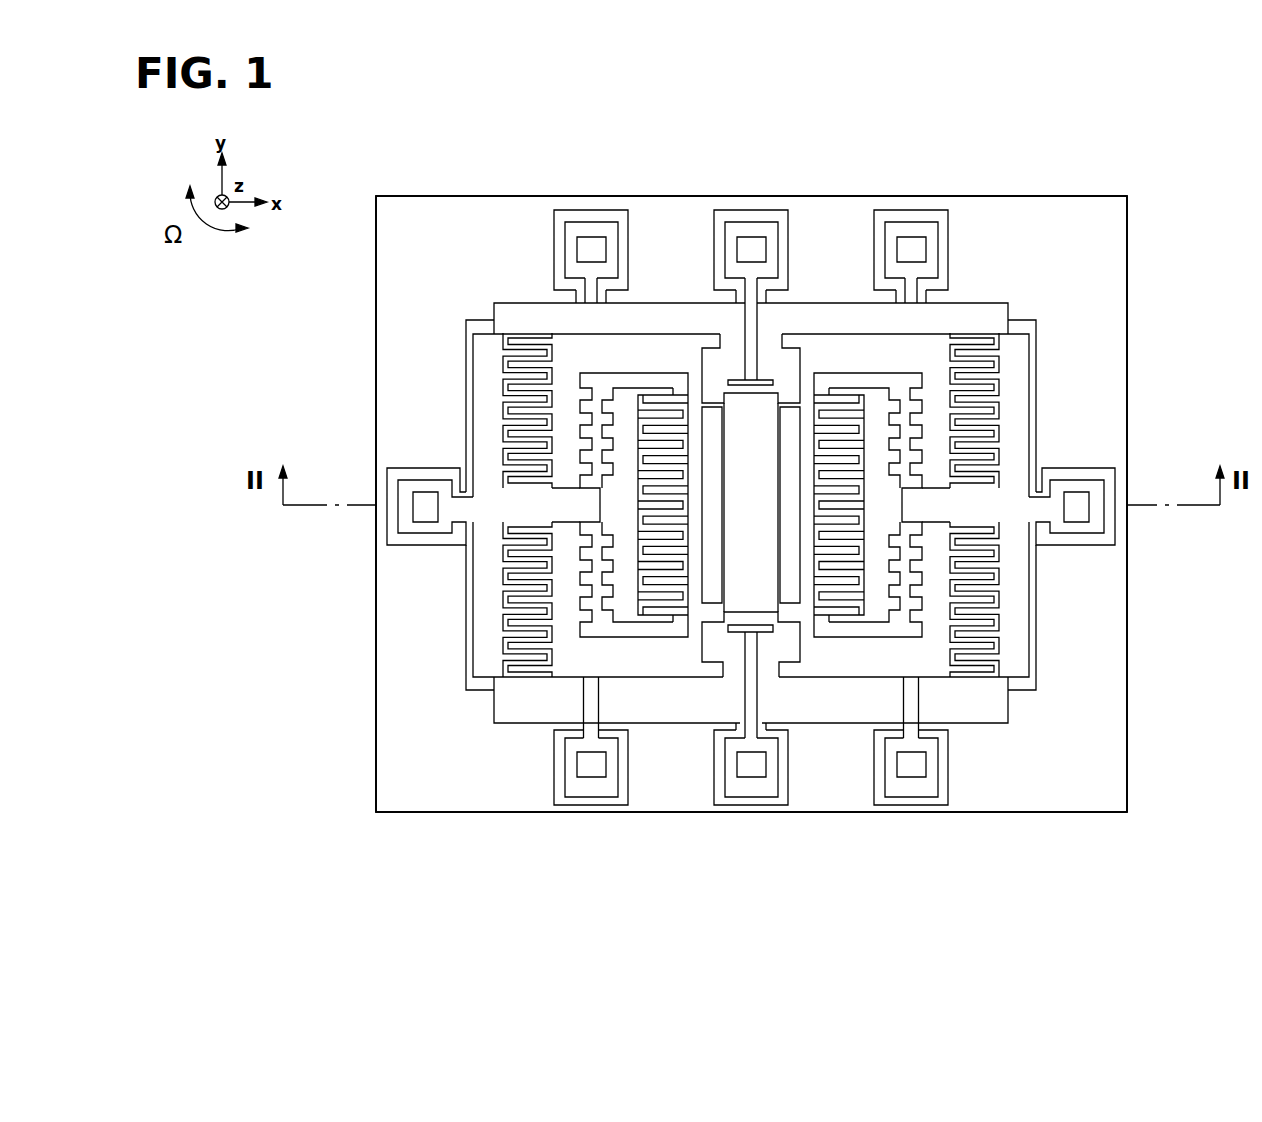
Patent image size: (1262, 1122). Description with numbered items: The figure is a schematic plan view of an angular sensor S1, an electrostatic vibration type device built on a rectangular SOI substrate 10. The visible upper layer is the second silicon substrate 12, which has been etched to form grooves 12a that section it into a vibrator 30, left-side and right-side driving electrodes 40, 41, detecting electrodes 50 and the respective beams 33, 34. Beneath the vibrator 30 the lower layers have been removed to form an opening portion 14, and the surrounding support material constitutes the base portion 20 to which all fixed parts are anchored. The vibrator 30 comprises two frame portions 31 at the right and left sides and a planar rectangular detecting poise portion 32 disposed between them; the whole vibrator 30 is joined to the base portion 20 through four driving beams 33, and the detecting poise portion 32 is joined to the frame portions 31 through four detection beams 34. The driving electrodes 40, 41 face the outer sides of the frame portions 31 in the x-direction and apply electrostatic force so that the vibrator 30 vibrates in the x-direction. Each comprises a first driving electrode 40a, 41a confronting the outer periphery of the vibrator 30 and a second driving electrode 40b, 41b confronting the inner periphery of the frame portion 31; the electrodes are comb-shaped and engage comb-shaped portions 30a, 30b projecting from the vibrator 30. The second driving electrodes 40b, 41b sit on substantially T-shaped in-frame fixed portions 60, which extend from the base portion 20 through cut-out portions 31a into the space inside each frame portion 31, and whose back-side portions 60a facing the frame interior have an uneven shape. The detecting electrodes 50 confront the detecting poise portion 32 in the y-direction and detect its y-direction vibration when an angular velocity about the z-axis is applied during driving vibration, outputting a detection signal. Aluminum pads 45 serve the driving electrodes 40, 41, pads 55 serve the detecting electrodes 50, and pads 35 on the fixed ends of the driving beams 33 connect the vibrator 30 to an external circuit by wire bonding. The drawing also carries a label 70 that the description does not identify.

The SOI substrate 10 is at (1132, 415).
The second silicon substrate 12 is at (1095, 392).
The grooves 12a is at (411, 473).
The opening portion 14 is at (510, 303).
The base portion 20 is at (376, 362).
The vibrator 30 is at (754, 485).
The comb-shaped portion 30a is at (508, 336).
The comb-shaped portion 30b is at (673, 623).
The frame portion 31 is at (641, 347).
The cut-out portion 31a is at (565, 495).
The detecting poise portion 32 is at (704, 603).
The driving beam 33 is at (597, 390).
The detection beam 34 is at (793, 400).
The pad 35 is at (591, 250).
The left-side driving electrode 40 is at (465, 544).
The first driving electrode 40a is at (543, 338).
The second driving electrode 40b is at (638, 623).
The right-side driving electrode 41 is at (1068, 464).
The first driving electrode 41a is at (920, 630).
The second driving electrode 41b is at (959, 340).
The pad 45 is at (426, 505).
The detecting electrode 50 is at (741, 377).
The pad 55 is at (751, 250).
The in-frame fixed portion 60 is at (548, 523).
The back-side portion 60a is at (582, 633).
The coupling portion 70 is at (517, 330).
The angular sensor S1 is at (1112, 189).